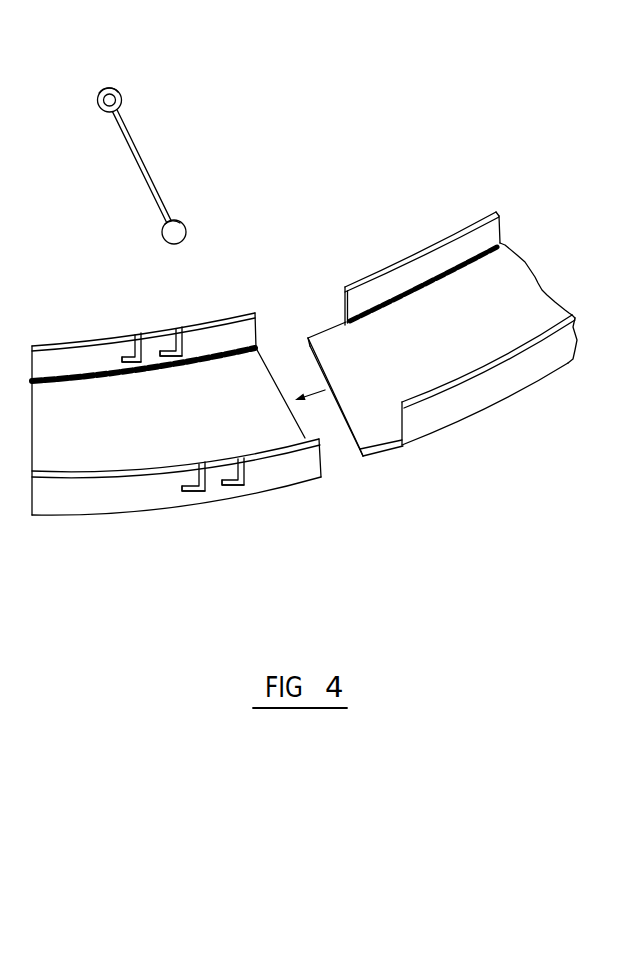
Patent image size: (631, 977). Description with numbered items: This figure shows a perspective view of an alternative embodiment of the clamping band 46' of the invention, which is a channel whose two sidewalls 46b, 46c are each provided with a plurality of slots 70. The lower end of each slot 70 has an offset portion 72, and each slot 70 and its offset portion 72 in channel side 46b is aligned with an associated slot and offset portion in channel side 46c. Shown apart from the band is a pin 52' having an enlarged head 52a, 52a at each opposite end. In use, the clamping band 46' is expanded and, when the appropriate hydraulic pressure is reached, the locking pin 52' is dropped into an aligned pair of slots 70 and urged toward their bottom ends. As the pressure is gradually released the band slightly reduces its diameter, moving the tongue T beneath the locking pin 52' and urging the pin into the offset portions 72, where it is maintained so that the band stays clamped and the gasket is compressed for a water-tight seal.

The locking pin 52' is at (153, 127).
The enlarged head 52a is at (110, 88).
The clamping band 46' is at (304, 404).
The channel sidewall 46b is at (83, 357).
The channel sidewall 46c is at (108, 468).
The slot 70 is at (179, 330).
The offset portion 72 is at (223, 483).
The tongue T is at (375, 438).